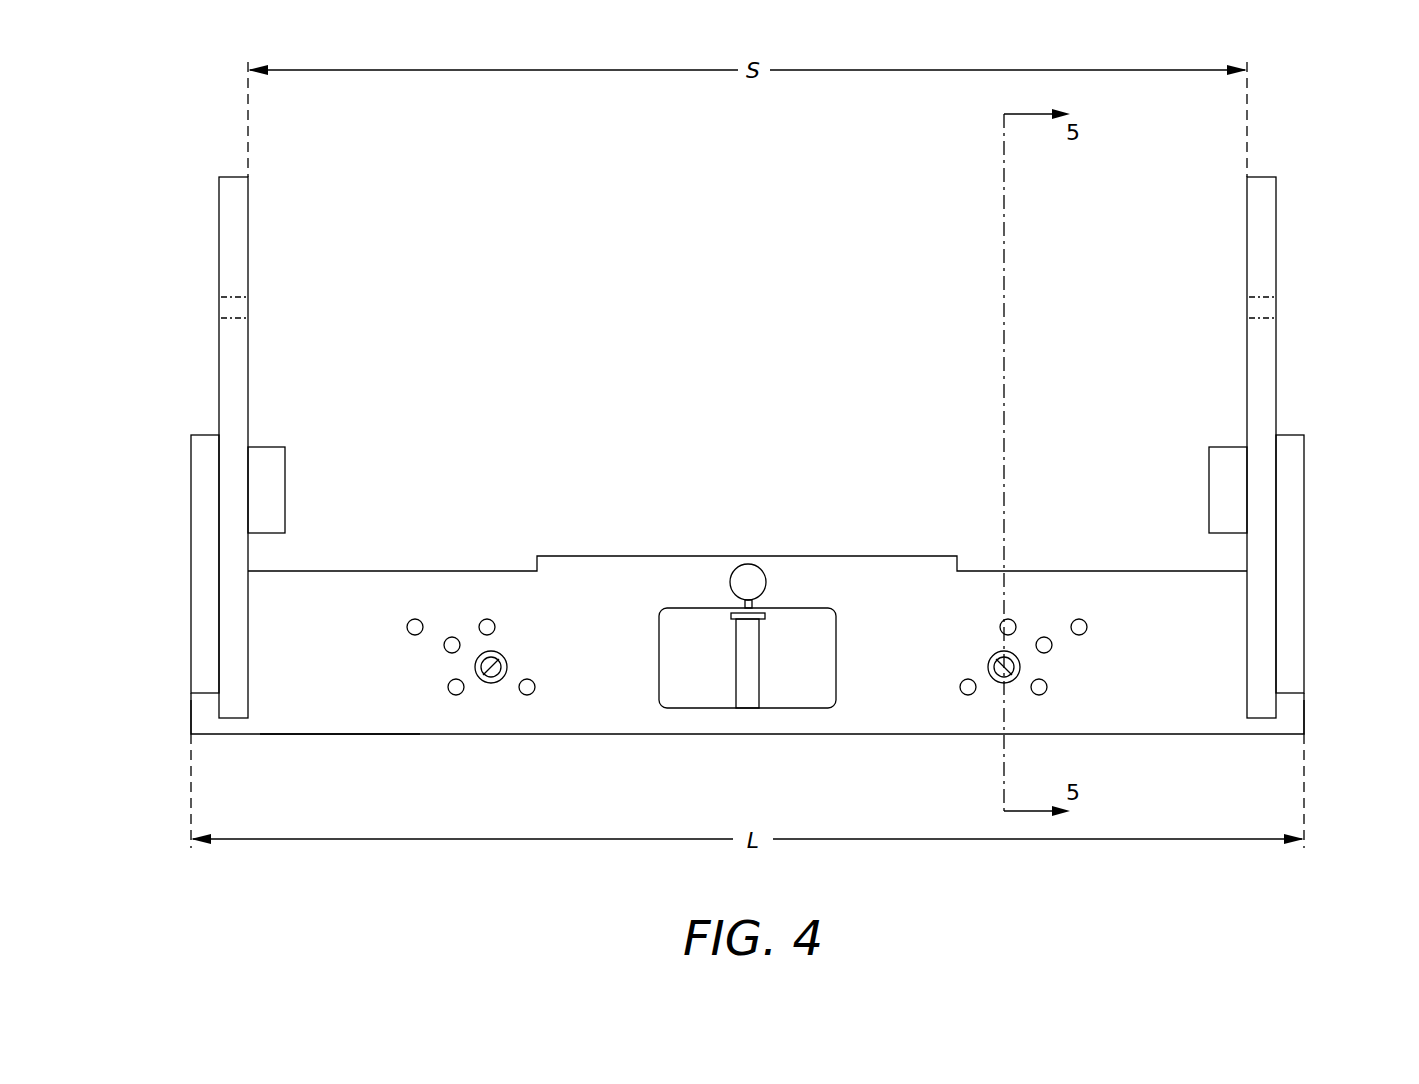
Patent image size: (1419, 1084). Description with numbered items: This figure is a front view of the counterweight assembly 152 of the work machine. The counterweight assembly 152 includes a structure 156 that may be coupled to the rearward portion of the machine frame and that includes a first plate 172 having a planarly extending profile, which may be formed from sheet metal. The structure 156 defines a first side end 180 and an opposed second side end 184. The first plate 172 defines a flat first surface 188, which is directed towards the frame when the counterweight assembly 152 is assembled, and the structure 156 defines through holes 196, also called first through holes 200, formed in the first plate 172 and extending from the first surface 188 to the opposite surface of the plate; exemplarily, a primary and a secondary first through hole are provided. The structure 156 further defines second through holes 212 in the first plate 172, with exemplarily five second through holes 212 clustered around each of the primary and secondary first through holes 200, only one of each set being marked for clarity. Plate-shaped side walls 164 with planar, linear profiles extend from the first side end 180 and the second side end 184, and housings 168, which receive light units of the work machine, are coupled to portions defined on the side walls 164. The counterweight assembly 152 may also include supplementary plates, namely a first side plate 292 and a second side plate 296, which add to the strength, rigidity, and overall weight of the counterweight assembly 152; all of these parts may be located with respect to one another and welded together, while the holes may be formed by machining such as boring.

The counterweight assembly 152 is at (176, 95).
The structure 156 is at (558, 743).
The side walls 164 is at (219, 207).
The housings 168 is at (250, 447).
The first plate 172 is at (332, 736).
The first side end 180 is at (180, 722).
The second side end 184 is at (1318, 722).
The first surface 188 is at (878, 695).
The through holes 196 is at (491, 651).
The first through holes 200 is at (747, 667).
The second through holes 212 is at (415, 619).
The first side plate 292 is at (191, 588).
The second side plate 296 is at (1304, 588).